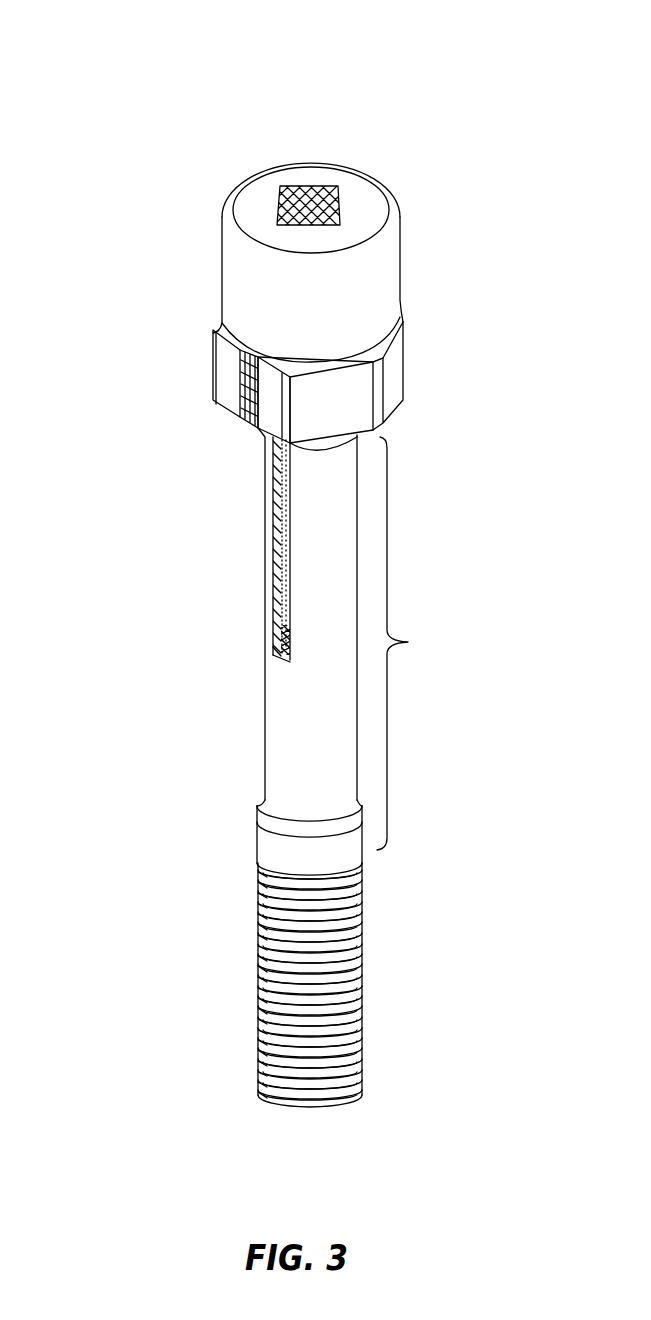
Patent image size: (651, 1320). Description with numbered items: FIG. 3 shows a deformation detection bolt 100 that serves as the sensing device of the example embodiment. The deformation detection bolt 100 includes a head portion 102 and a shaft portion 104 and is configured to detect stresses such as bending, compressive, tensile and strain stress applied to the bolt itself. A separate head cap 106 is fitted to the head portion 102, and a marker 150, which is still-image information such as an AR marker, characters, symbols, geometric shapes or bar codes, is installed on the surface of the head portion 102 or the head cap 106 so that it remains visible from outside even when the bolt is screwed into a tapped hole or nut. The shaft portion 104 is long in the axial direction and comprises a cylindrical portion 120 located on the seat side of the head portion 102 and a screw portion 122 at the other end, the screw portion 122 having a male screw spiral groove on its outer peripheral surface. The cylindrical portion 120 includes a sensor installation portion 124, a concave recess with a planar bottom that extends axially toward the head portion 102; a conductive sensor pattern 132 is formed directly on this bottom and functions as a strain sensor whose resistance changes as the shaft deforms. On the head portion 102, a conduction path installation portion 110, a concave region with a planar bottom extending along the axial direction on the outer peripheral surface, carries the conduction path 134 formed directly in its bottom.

The deformation detection bolt 100 is at (222, 148).
The head portion 102 is at (395, 368).
The shaft portion 104 is at (238, 733).
The head cap 106 is at (372, 217).
The conduction path installation portion 110 is at (240, 357).
The cylindrical portion 120 is at (427, 643).
The screw portion 122 is at (362, 1005).
The sensor installation portion 124 is at (280, 652).
The sensor pattern 132 is at (273, 600).
The conduction path 134 is at (238, 388).
The marker 150 is at (303, 190).